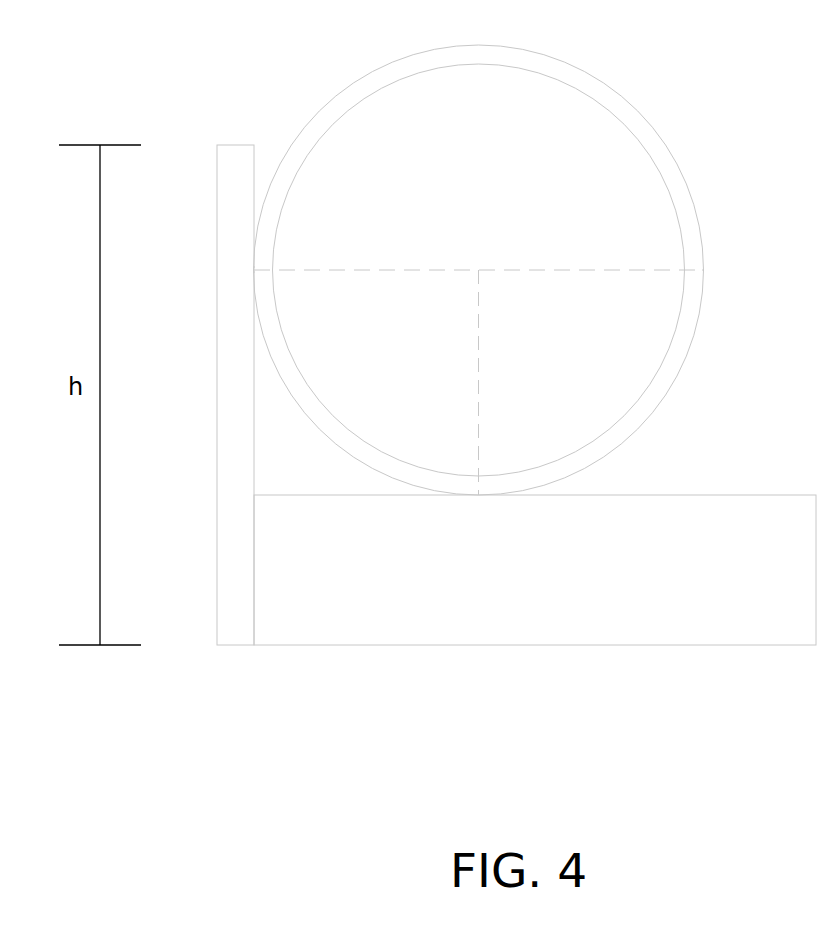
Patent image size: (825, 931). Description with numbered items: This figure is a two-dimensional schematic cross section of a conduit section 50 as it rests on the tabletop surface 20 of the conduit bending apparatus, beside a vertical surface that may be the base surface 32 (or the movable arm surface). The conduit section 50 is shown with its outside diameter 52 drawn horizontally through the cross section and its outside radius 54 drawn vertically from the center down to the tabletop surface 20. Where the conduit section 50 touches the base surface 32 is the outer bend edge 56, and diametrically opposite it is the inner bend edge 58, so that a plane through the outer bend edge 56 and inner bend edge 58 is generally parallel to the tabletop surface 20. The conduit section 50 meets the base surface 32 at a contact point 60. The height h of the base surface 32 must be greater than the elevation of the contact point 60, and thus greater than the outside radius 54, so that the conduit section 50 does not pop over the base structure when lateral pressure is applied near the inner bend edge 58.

The tabletop surface 20 is at (682, 495).
The base surface 32 is at (254, 166).
The conduit section 50 is at (620, 93).
The outside diameter 52 is at (363, 270).
The outside radius 54 is at (478, 382).
The outer bend edge 56 is at (254, 272).
The inner bend edge 58 is at (703, 270).
The contact point 60 is at (254, 268).